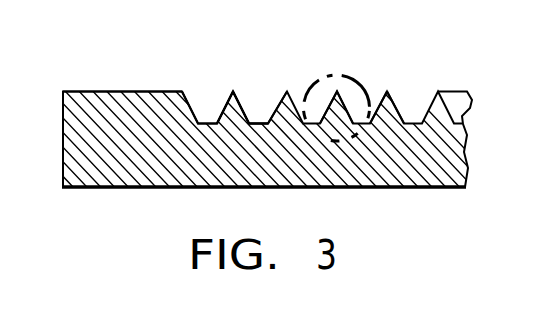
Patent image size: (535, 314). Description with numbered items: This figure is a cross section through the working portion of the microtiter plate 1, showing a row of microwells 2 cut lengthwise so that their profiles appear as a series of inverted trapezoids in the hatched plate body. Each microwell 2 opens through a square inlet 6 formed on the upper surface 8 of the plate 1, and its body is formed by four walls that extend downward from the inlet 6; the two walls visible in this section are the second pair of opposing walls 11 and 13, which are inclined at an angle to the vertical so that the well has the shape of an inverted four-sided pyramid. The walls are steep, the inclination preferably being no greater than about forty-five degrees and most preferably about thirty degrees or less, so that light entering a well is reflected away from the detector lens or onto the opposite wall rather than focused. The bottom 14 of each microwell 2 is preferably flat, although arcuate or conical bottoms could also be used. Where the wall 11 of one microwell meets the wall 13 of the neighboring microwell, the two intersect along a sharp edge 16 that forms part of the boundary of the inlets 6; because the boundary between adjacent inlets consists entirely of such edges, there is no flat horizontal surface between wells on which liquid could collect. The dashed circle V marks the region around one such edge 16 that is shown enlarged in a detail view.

The microtiter plate 1 is at (63, 120).
The upper surface 8 is at (92, 92).
The inlet 6 is at (210, 92).
The microwell 2 is at (250, 92).
The bottom 14 is at (258, 124).
The edge 16 is at (335, 92).
The detail circle V is at (345, 77).
The wall 11 is at (378, 92).
The wall 13 is at (400, 102).